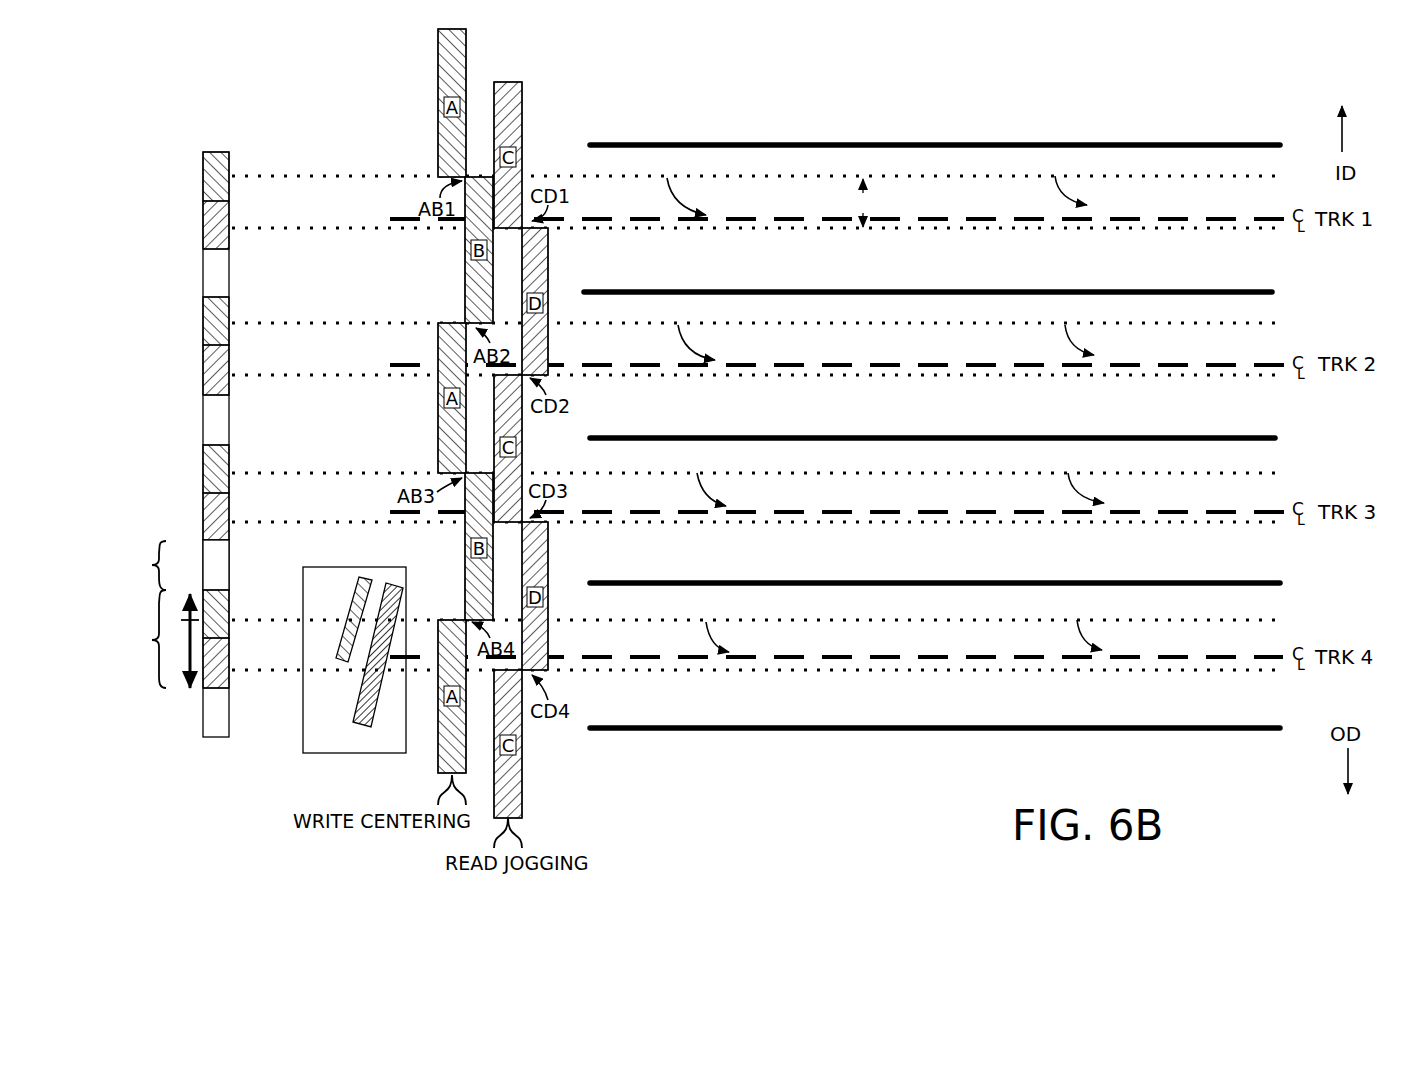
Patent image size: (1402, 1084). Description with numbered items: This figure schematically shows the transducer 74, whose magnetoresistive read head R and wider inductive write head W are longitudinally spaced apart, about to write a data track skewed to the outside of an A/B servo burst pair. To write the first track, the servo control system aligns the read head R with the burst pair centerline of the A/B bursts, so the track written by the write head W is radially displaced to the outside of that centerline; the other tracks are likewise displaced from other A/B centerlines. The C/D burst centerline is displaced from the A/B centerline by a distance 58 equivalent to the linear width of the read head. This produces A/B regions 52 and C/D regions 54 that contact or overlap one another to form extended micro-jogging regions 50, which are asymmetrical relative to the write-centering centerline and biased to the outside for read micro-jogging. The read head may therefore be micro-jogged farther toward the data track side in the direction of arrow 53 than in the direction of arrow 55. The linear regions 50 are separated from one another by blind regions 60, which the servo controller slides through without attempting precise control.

The extended micro-jogging region 50 is at (174, 444).
The A/B region 52 is at (216, 618).
The C/D region 54 is at (216, 666).
The arrow 55 is at (190, 606).
The arrow 53 is at (190, 672).
The blind region 60 is at (218, 578).
The distance 58 is at (876, 212).
The transducer 74 is at (357, 754).